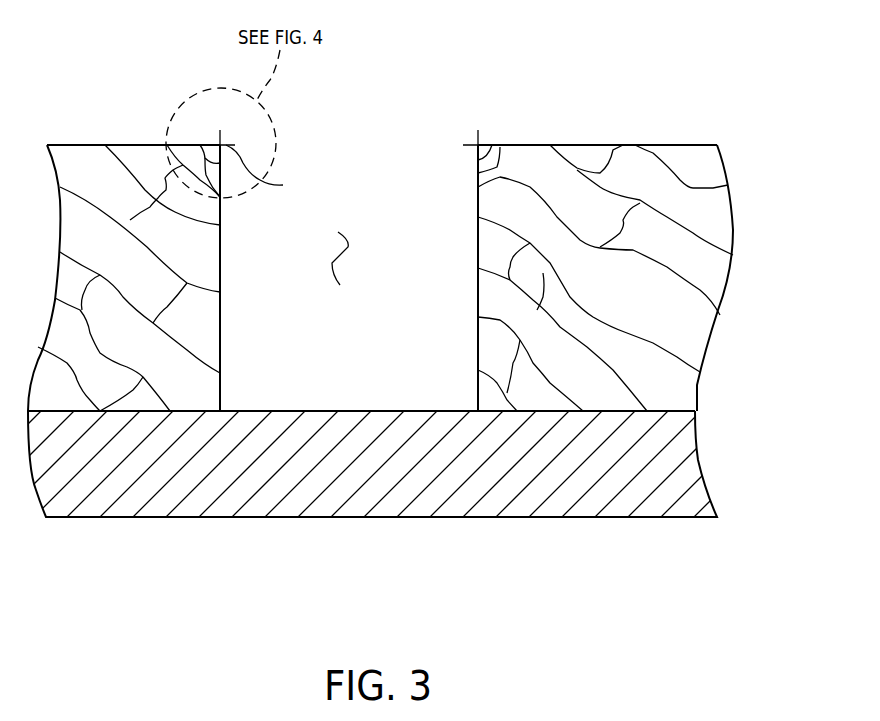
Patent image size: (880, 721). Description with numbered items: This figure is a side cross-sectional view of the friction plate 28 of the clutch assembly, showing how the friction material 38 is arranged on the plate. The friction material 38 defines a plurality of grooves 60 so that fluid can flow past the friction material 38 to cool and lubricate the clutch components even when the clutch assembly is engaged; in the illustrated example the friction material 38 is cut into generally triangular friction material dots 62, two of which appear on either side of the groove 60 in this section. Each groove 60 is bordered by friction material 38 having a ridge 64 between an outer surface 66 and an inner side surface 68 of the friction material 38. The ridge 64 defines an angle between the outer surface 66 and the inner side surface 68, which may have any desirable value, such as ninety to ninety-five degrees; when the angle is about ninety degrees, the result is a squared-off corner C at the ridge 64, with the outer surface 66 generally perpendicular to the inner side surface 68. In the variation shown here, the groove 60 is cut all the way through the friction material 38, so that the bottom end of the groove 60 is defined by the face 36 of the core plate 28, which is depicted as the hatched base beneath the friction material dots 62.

The friction plate 28 is at (343, 487).
The face of the core plate 36 is at (350, 411).
The friction material 38 is at (580, 110).
The groove 60 is at (332, 263).
The friction material dots 62 is at (93, 187).
The ridge 64 is at (220, 146).
The outer surface 66 is at (133, 143).
The inner side surface 68 is at (222, 335).
The squared-off corner C is at (280, 186).